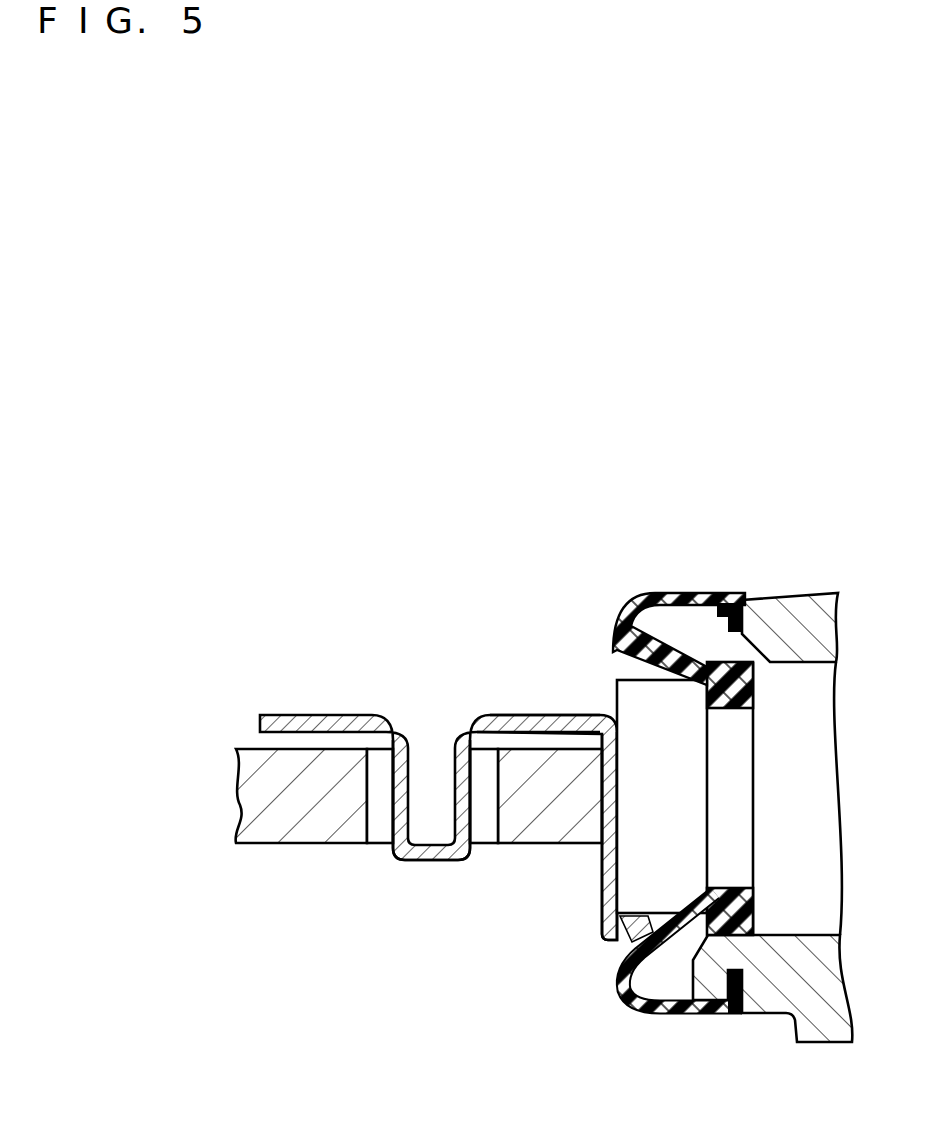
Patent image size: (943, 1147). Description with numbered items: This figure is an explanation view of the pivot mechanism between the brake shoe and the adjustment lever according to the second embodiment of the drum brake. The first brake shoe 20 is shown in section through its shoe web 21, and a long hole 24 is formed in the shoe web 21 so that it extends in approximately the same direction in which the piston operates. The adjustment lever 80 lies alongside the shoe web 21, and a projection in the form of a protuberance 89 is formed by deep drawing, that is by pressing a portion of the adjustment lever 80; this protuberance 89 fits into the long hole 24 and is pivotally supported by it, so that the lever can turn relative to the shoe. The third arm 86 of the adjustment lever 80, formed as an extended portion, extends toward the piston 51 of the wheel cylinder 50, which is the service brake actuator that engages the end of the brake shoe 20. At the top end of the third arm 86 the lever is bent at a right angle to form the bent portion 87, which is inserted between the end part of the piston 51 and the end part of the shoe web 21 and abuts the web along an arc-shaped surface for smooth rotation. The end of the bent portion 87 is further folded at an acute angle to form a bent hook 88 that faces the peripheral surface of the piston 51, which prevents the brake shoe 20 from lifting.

The first brake shoe 20 is at (356, 850).
The shoe web 21 is at (272, 838).
The long hole 24 is at (381, 838).
The wheel cylinder 50 is at (802, 592).
The piston 51 is at (637, 693).
The adjustment lever 80 is at (428, 747).
The third arm 86 is at (528, 714).
The bent portion 87 is at (600, 868).
The bent hook 88 is at (620, 948).
The protuberance 89 is at (440, 862).